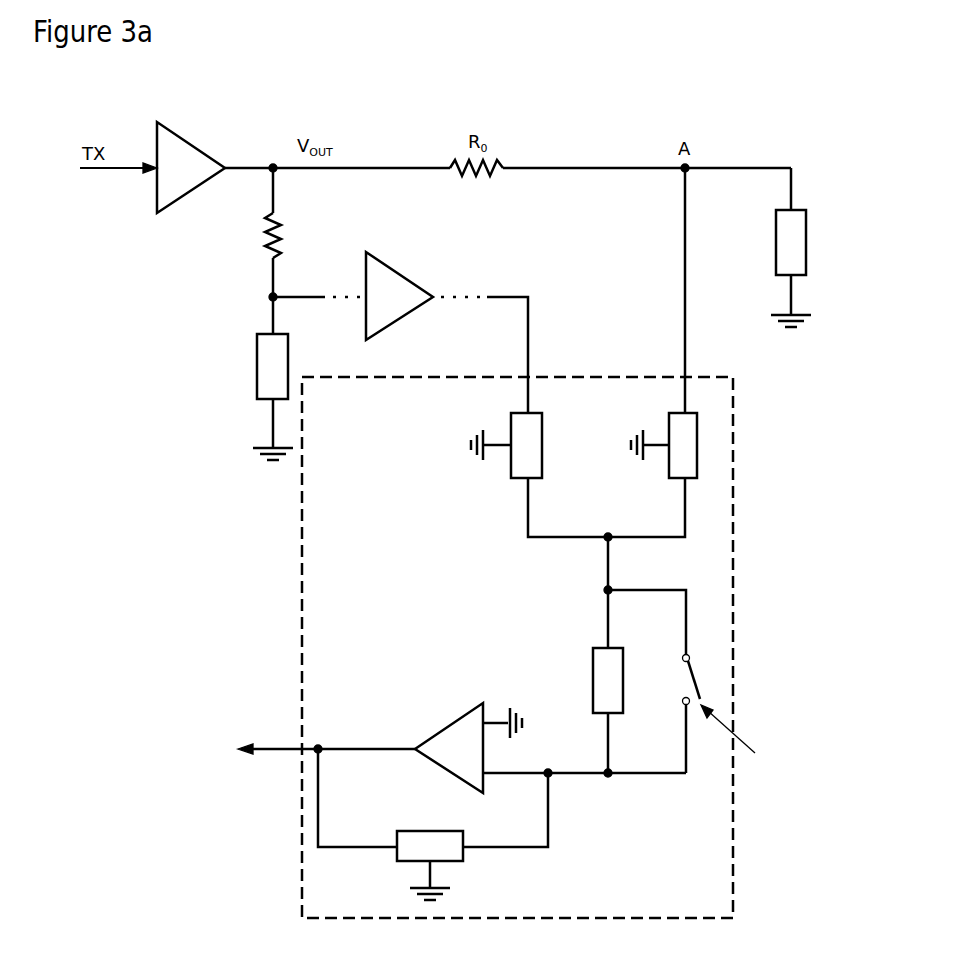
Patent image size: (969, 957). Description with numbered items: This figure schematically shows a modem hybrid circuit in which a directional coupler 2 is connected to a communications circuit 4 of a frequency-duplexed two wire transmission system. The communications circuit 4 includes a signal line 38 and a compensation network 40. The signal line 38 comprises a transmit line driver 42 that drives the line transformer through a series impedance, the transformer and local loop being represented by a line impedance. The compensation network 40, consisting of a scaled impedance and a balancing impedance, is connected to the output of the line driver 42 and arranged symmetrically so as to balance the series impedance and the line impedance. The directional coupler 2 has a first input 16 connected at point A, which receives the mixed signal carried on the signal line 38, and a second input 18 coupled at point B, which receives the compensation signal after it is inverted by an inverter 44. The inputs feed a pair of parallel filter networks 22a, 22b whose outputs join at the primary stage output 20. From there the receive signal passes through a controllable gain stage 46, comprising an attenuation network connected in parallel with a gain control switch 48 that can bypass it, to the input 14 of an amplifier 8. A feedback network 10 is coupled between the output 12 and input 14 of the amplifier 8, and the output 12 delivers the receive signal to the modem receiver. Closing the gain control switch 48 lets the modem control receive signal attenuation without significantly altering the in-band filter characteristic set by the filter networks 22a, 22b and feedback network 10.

The directional coupler circuit 2 is at (733, 462).
The communication circuit 4 is at (772, 108).
The amplifier 8 is at (462, 716).
The feedback network 10 is at (425, 831).
The output 12 is at (355, 742).
The input 14 is at (519, 780).
The first input 16 is at (689, 331).
The second input 18 is at (532, 333).
The primary stage output 20 is at (601, 557).
The filter network 22a is at (669, 478).
The filter network 22b is at (533, 478).
The signal line 38 is at (589, 168).
The compensation network 40 is at (188, 305).
The transmit line driver 42 is at (180, 133).
The inverter 44 is at (378, 262).
The controllable gain stage 46 is at (592, 668).
The gain control switch 48 is at (702, 676).